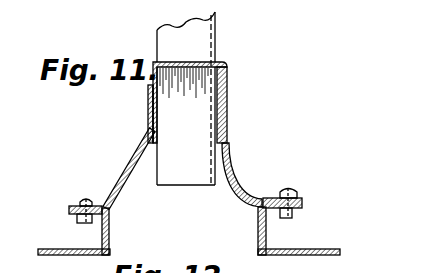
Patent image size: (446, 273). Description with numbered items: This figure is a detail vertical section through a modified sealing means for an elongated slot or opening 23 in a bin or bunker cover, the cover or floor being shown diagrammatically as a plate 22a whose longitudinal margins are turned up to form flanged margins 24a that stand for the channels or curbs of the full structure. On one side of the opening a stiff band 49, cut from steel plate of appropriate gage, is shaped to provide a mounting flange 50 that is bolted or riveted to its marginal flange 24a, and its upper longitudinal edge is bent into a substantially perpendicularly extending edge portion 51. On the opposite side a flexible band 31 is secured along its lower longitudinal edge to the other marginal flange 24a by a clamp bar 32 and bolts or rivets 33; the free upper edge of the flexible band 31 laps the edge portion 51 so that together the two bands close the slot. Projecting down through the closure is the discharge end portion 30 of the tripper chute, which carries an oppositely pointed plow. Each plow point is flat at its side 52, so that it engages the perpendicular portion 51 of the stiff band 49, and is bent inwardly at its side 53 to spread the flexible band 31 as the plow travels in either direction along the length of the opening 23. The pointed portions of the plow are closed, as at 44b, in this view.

The discharge end portion of the tripper chute 30 is at (216, 50).
The closed portion of the plow points 44b is at (170, 62).
The inwardly bent side of the plow points 53 is at (229, 95).
The perpendicularly extending edge portion 51 is at (149, 102).
The flat side of the plow points 52 is at (148, 118).
The stiff band 49 is at (137, 150).
The flexible band 31 is at (236, 170).
The slot or opening 23 is at (247, 226).
The plate 22a is at (56, 233).
The flanged longitudinal margin 24a is at (68, 208).
The mounting flange 50 is at (102, 200).
The bolts or rivets 33 is at (287, 190).
The clamp bar 32 is at (298, 195).